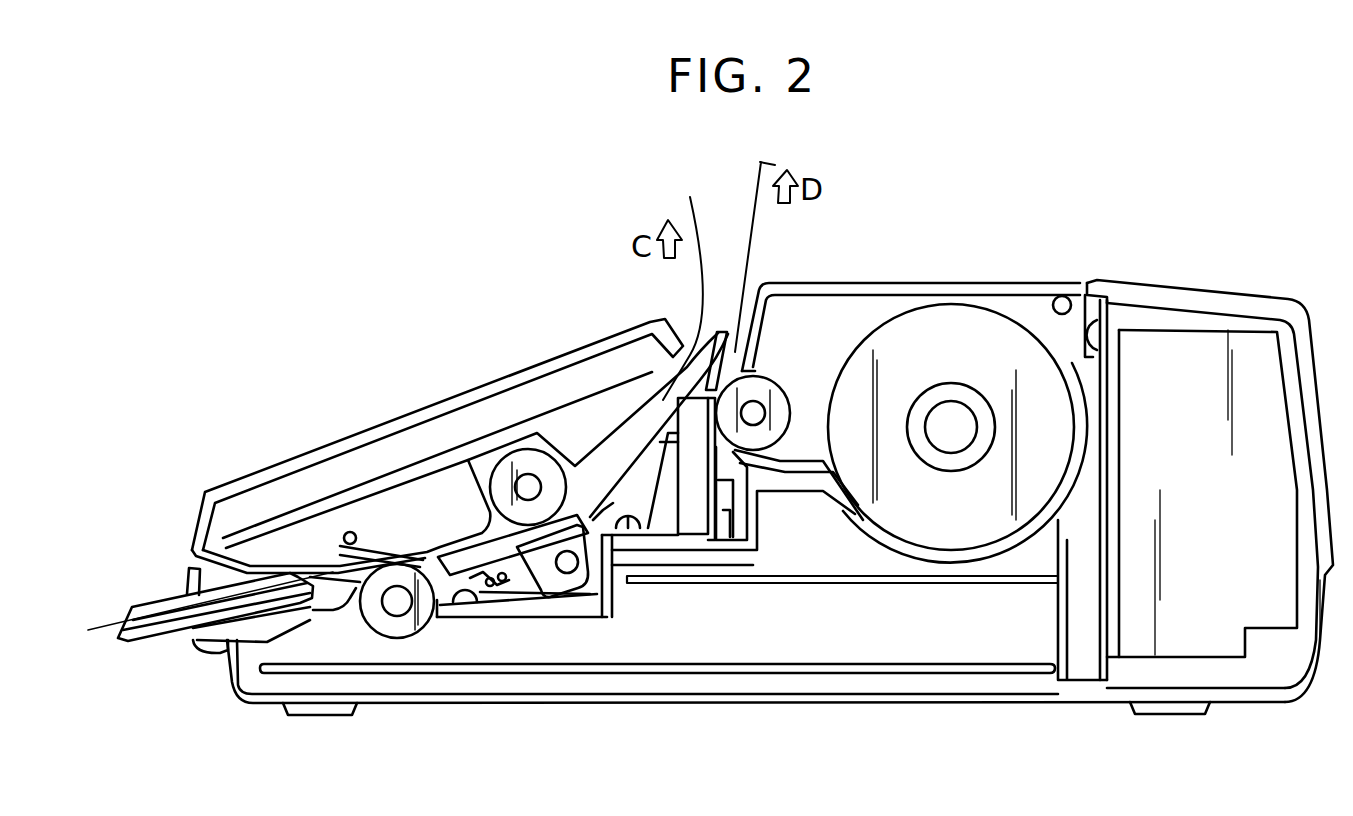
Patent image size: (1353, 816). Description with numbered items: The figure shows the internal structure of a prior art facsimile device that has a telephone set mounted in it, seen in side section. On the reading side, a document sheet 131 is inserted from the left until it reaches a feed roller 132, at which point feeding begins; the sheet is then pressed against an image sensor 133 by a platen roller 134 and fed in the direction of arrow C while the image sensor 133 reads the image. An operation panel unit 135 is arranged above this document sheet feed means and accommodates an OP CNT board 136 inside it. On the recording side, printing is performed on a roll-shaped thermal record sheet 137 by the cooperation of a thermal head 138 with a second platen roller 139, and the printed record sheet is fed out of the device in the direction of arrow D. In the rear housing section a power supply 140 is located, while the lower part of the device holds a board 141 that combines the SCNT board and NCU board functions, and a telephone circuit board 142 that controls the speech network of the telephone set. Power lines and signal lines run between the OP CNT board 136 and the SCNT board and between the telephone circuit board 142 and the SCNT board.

The document sheet 131 is at (112, 622).
The feed roller 132 is at (373, 615).
The image sensor 133 is at (483, 558).
The platen roller 134 is at (523, 462).
The operation panel unit 135 is at (300, 464).
The OP CNT board 136 is at (443, 450).
The roll-shaped thermal record sheet 137 is at (960, 303).
The thermal head 138 is at (693, 507).
The platen roller 139 is at (760, 387).
The power supply 140 is at (1180, 353).
The board 141 is at (797, 668).
The telephone circuit board 142 is at (900, 577).